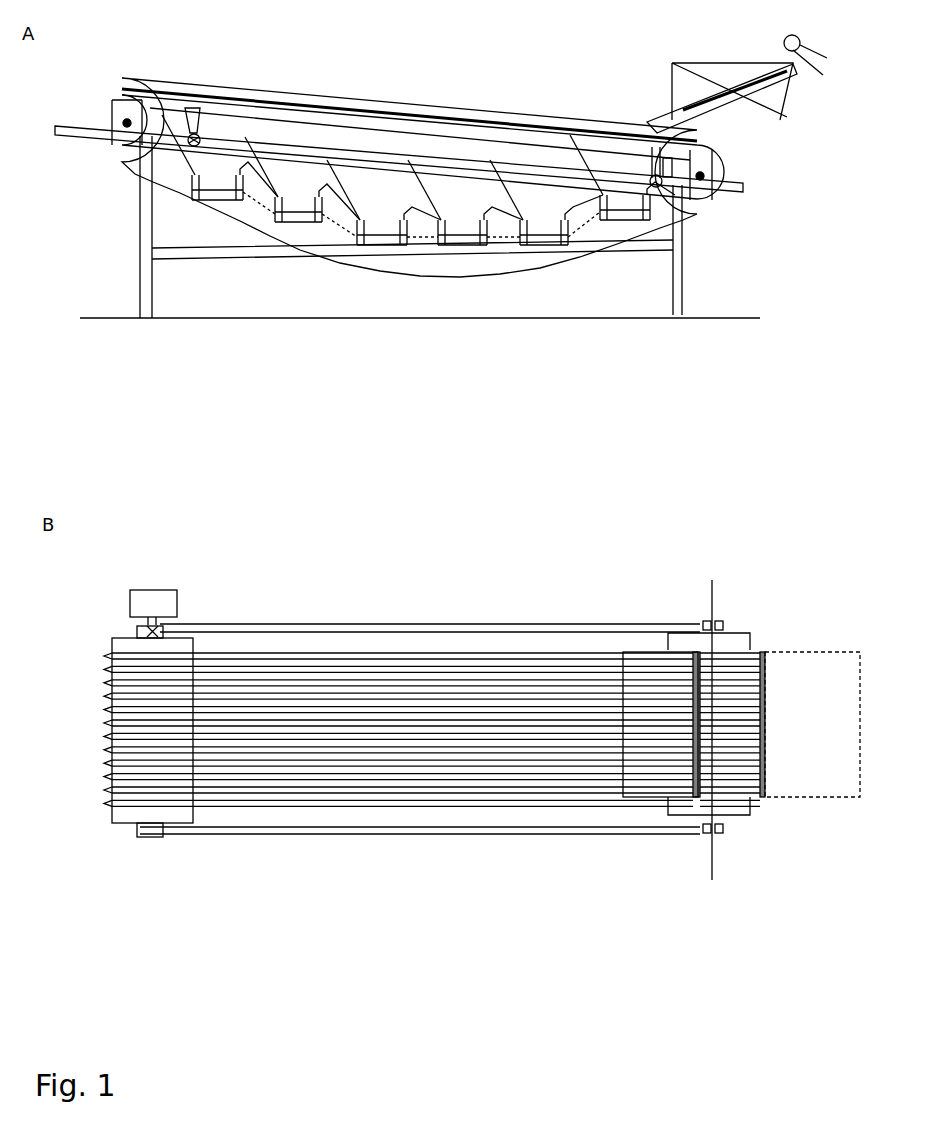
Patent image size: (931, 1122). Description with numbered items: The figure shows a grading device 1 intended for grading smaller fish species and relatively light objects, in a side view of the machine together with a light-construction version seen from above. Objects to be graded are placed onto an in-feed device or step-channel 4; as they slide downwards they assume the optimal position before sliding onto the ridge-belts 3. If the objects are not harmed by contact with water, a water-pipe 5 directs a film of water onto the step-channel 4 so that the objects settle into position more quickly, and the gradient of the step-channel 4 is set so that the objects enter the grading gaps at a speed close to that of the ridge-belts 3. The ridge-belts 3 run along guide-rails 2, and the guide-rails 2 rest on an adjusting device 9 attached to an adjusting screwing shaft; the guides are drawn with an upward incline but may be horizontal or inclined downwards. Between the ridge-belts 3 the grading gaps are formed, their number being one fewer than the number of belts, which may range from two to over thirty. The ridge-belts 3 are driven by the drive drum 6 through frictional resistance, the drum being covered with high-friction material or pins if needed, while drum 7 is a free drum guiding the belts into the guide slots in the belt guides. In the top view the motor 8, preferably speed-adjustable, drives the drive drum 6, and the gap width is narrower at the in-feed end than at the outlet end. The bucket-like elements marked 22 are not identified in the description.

The grading device 1 is at (409, 159).
The guide-rails 2 is at (230, 104).
The buckets 22 is at (320, 140).
The ridge-belts 3 is at (127, 95).
The in-feed device (step-channel) 4 is at (672, 63).
The water-pipe 5 is at (775, 110).
The drive drum 6 is at (113, 118).
The free drum 7 is at (717, 172).
The motor 8 is at (160, 596).
The adjusting device 9 is at (188, 110).